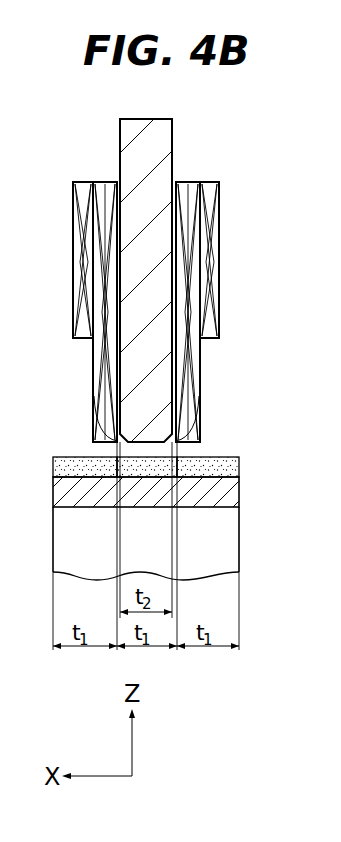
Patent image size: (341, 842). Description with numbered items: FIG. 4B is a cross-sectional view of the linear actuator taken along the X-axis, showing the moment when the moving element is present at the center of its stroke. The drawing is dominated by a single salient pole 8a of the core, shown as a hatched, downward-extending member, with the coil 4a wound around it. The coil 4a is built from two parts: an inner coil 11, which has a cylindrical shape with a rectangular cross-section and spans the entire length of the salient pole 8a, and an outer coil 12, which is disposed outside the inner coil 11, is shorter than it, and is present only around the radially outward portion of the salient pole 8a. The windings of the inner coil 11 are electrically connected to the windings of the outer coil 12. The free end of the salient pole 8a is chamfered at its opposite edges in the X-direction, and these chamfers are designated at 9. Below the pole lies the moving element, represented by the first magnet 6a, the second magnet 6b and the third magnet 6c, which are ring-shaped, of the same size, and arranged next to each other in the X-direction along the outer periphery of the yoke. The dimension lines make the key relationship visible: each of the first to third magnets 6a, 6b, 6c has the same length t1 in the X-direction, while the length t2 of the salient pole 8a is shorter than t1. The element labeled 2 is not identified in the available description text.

The core rod 2 is at (184, 138).
The coil 4a is at (268, 143).
The inner coil 11 is at (190, 199).
The outer coil 12 is at (210, 223).
The salient pole 8a is at (166, 313).
The chamfered edges 9 is at (97, 437).
The first magnet 6a is at (77, 462).
The second magnet 6b is at (168, 463).
The third magnet 6c is at (160, 466).